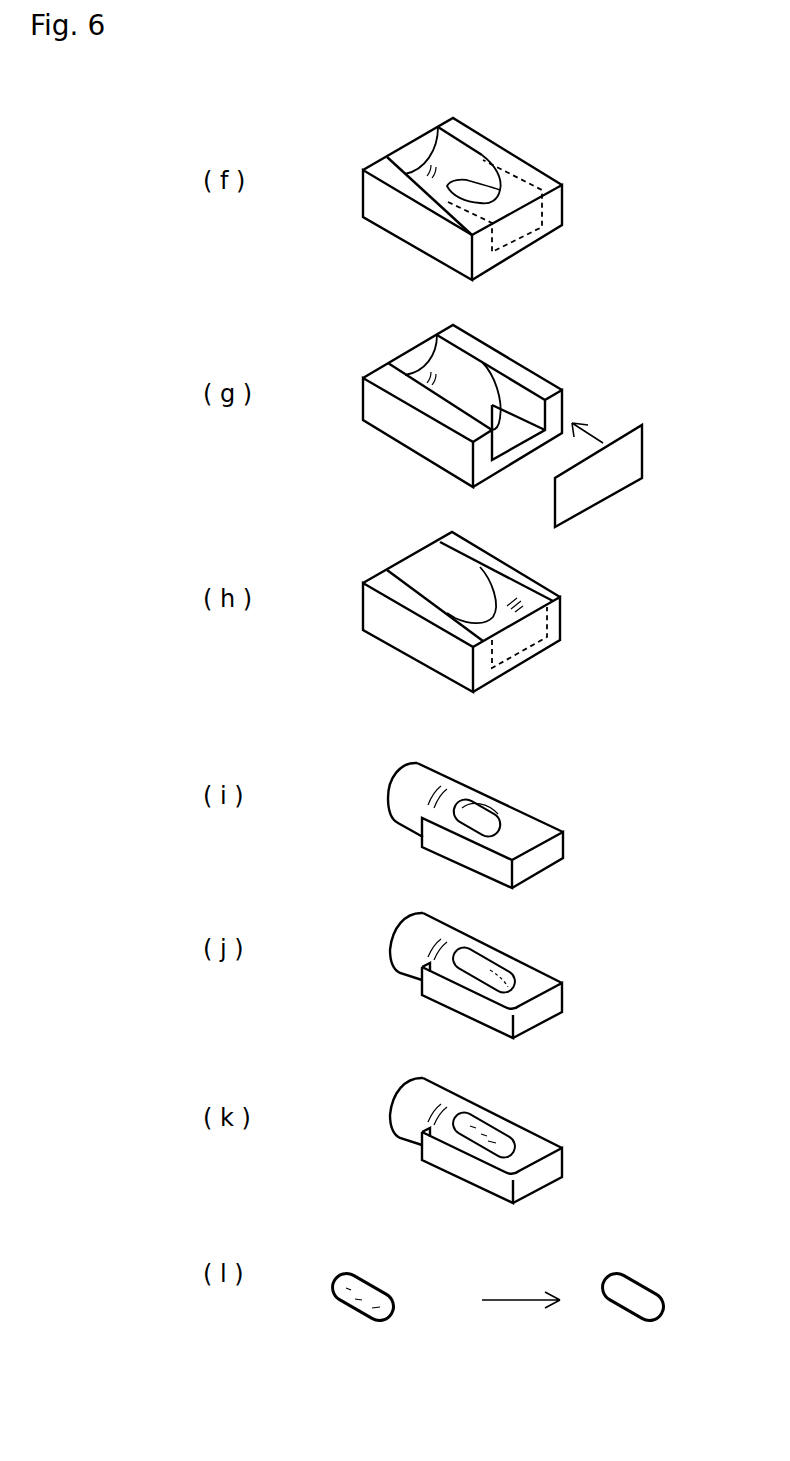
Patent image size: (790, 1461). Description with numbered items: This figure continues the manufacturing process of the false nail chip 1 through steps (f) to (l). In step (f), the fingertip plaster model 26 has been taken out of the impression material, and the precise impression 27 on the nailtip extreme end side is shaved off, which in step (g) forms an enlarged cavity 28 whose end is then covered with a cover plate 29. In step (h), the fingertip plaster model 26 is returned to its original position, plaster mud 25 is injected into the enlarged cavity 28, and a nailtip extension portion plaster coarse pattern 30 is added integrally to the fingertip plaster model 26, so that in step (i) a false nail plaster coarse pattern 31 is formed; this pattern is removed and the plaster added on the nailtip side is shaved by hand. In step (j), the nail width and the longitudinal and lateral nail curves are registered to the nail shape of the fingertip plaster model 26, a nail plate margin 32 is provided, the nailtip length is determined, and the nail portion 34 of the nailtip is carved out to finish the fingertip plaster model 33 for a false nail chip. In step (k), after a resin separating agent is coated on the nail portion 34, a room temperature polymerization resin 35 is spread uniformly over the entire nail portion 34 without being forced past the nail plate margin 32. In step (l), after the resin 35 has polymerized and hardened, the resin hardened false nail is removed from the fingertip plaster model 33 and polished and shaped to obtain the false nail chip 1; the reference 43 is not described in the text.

The precise impression 27 is at (517, 235).
The enlarged cavity 28 is at (508, 430).
The cover plate 29 is at (628, 458).
The plaster mud 25 is at (522, 597).
The fingertip plaster model 26 is at (428, 565).
The nailtip extension portion plaster coarse pattern 30 is at (520, 840).
The false nail plaster coarse pattern 31 is at (550, 804).
The nail plate margin 32 is at (512, 962).
The fingertip plaster model for a false nail chip 33 is at (543, 955).
The nail portion 34 is at (486, 955).
The room temperature polymerization resin 35 is at (487, 1132).
The molded preform 43 is at (375, 1298).
The false nail chip 1 is at (645, 1298).